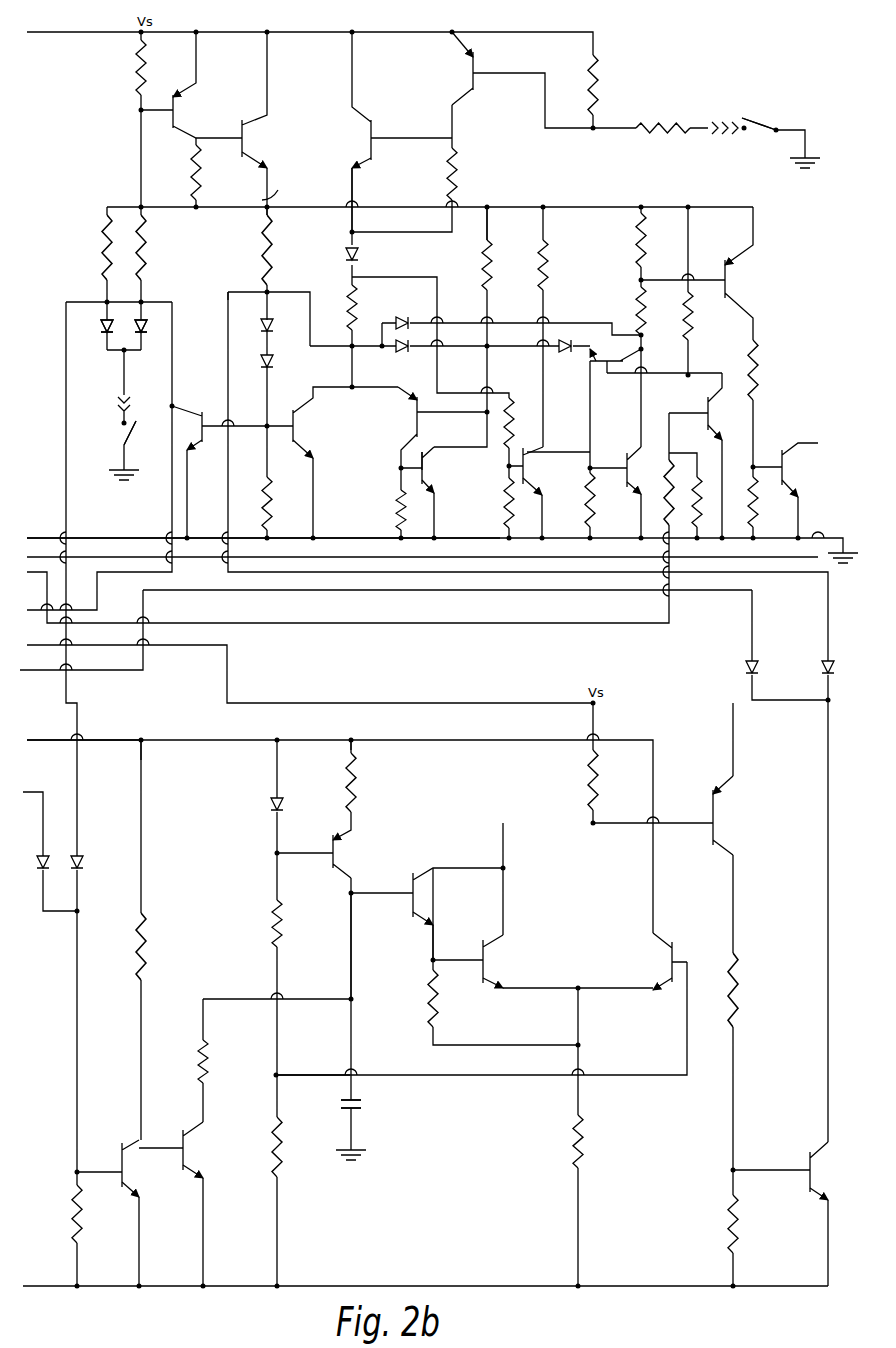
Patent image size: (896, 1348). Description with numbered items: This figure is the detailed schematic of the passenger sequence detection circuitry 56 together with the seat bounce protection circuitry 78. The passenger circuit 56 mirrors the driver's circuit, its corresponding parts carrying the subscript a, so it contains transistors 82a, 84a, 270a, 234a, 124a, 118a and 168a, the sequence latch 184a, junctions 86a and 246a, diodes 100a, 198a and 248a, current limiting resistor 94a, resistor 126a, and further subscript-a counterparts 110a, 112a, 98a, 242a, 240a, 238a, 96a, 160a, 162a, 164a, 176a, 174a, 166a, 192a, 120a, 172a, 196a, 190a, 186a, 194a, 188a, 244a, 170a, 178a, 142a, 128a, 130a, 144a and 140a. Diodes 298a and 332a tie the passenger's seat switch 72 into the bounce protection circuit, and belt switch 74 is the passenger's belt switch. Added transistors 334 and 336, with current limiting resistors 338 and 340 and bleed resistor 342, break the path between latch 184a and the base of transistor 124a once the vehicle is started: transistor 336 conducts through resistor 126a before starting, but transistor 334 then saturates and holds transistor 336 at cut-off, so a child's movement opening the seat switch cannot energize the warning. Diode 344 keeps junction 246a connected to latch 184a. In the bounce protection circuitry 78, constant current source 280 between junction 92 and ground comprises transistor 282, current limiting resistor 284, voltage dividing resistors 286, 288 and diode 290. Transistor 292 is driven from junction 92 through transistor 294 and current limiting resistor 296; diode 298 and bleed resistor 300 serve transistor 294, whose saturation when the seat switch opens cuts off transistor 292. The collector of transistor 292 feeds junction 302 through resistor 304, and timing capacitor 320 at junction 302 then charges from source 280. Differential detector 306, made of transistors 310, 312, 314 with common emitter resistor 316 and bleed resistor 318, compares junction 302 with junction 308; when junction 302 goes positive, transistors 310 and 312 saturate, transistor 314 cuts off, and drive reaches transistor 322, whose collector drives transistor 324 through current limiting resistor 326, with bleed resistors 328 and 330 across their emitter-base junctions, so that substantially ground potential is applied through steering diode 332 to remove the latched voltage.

The passenger sequence detection circuitry 56 is at (112, 192).
The resistor 110a is at (138, 68).
The transistor 82a is at (180, 110).
The resistor 112a is at (192, 172).
The transistor 84a is at (248, 142).
The junction 86a is at (280, 196).
The resistor 98a is at (104, 250).
The current limiting resistor 94a is at (146, 252).
The resistor 242a is at (262, 270).
The junction 246a is at (266, 292).
The diode 240a is at (272, 320).
The diode 238a is at (262, 358).
The transistor 270a is at (203, 412).
The diode 100a is at (104, 333).
The diode 96a is at (144, 333).
The passenger's seat switch 72 is at (136, 436).
The transistor 160a is at (470, 73).
The transistor 162a is at (372, 130).
The conductor 164a is at (356, 232).
The resistor 176a is at (456, 178).
The resistor 174a is at (597, 82).
The resistor 166a is at (678, 125).
The belt switch 74 is at (762, 120).
The conductor 192a is at (490, 232).
The diode 248a is at (486, 262).
The resistor 120a is at (548, 235).
The diode 172a is at (346, 258).
The resistor 196a is at (354, 280).
The diode 190a is at (420, 308).
The diode 344 is at (398, 347).
The transistor 234a is at (296, 422).
The transistor 186a is at (412, 418).
The resistor 194a is at (398, 510).
The sequence latch 184a is at (418, 450).
The transistor base 188a is at (425, 456).
The resistor 244a is at (270, 492).
The resistor 170a is at (512, 425).
The resistor 178a is at (508, 503).
The transistor 168a is at (527, 455).
The steering diode 198a is at (567, 352).
The transistor 336 is at (600, 358).
The resistor 142a is at (655, 232).
The resistor 126a is at (636, 312).
The current limiting resistor 340 is at (693, 320).
The transistor 124a is at (730, 282).
The resistor 128a is at (757, 372).
The transistor 334 is at (712, 414).
The bleed resistor 342 is at (700, 482).
The current limiting resistor 338 is at (665, 493).
The transistor 118a is at (630, 463).
The transistor 130a is at (787, 470).
The resistor 144a is at (758, 505).
The ground conductor 140a is at (578, 542).
The steering diode 332 is at (747, 666).
The diode 332a is at (833, 665).
The junction 92 is at (142, 738).
The seat bounce protection circuitry 78 is at (232, 797).
The constant current source 280 is at (320, 812).
The current limiting resistor 284 is at (355, 778).
The transistor 282 is at (340, 848).
The diode 290 is at (272, 810).
The diode 298a is at (82, 860).
The diode 298 is at (48, 866).
The current limiting resistor 296 is at (146, 935).
The voltage dividing resistor 286 is at (282, 925).
The transistor 310 is at (420, 896).
The transistor 312 is at (492, 962).
The transistor 314 is at (668, 962).
The differential detector 306 is at (592, 914).
The bleed resistor 318 is at (438, 998).
The junction 302 is at (355, 1000).
The resistor 304 is at (208, 1052).
The junction 308 is at (278, 1073).
The timing capacitor 320 is at (362, 1102).
The voltage dividing resistor 288 is at (282, 1140).
The bleed resistor 300 is at (80, 1188).
The transistor 294 is at (134, 1150).
The transistor 292 is at (188, 1150).
The common emitter resistor 316 is at (582, 1140).
The bleed resistor 330 is at (730, 1222).
The current limiting resistor 326 is at (738, 992).
The transistor 322 is at (718, 818).
The bleed resistor 328 is at (598, 775).
The transistor 324 is at (813, 1156).